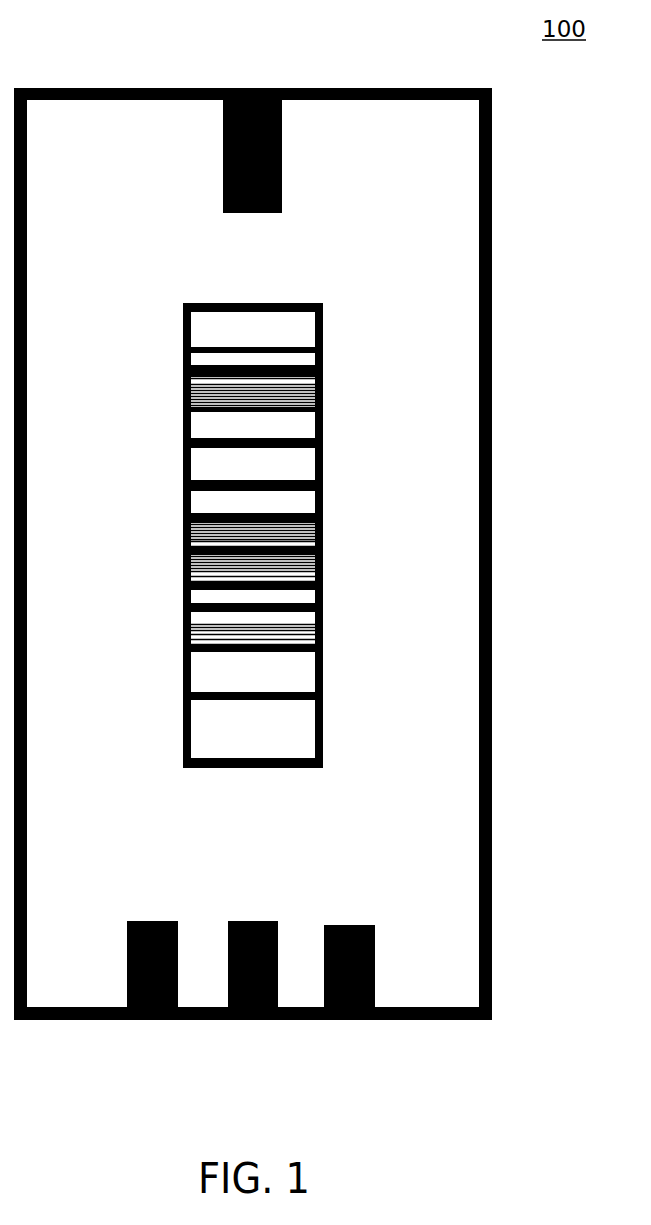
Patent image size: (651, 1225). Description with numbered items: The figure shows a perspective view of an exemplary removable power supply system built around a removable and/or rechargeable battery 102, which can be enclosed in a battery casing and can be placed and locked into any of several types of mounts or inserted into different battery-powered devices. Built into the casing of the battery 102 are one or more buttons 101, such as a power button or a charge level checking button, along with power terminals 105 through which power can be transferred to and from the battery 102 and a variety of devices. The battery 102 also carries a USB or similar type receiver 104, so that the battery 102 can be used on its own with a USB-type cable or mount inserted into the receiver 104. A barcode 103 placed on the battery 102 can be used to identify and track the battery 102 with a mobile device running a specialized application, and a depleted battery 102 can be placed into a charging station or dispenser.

The button 101 is at (256, 72).
The battery 102 is at (500, 473).
The barcode 103 is at (170, 452).
The USB type receiver 104 is at (256, 1032).
The power terminals 105 is at (152, 1032).